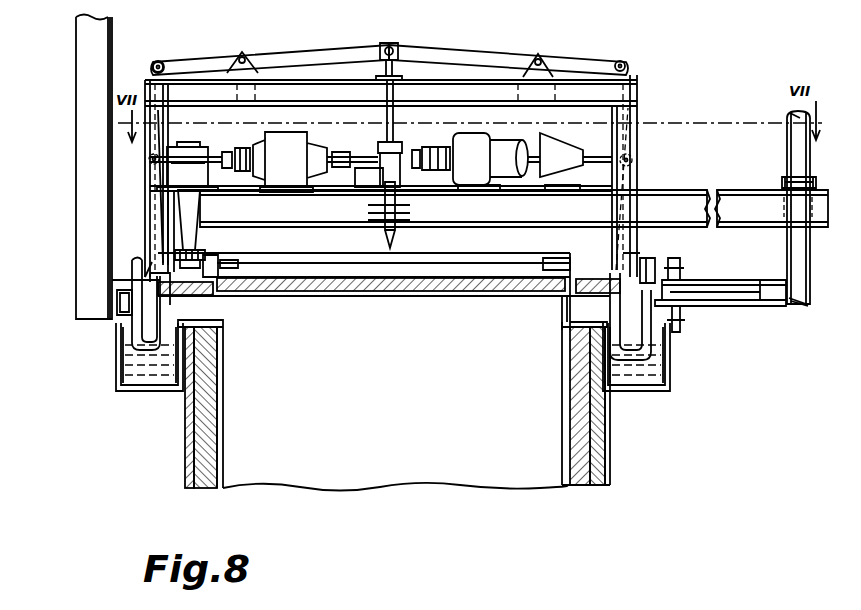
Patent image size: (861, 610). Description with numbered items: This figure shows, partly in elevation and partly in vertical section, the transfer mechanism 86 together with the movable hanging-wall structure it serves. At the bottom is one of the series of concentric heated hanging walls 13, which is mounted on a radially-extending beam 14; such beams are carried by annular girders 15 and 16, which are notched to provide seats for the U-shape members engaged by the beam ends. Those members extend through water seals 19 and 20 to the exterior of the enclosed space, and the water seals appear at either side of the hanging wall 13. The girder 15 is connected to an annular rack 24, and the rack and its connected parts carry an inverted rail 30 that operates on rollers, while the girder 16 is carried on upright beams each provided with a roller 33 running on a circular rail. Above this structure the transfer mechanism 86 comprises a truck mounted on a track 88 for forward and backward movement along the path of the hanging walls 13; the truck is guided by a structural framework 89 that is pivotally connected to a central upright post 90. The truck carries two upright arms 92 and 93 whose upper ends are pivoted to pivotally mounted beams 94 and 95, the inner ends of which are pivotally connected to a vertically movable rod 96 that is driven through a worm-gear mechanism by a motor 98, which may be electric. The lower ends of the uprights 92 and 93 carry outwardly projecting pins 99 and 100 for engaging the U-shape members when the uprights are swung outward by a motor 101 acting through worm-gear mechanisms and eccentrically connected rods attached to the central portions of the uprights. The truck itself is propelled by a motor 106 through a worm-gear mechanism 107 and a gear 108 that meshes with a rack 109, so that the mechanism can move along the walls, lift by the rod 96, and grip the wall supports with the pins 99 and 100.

The hanging wall 13 is at (394, 405).
The radially-extending beam 14 is at (590, 290).
The annular girder 15 is at (660, 341).
The annular girder 16 is at (105, 306).
The water seal 19 is at (672, 376).
The water seal 20 is at (118, 379).
The annular rack 24 is at (684, 271).
The inverted rail 30 is at (684, 323).
The roller 33 is at (95, 210).
The transfer mechanism 86 is at (598, 96).
The track 88 is at (398, 247).
The structural framework 89 is at (730, 200).
The central upright post 90 is at (798, 142).
The upright arm 92 is at (628, 67).
The upright arm 93 is at (150, 72).
The pivotally mounted beam 94 is at (502, 56).
The pivotally mounted beam 95 is at (292, 58).
The vertically movable rod 96 is at (398, 117).
The motor 98 is at (490, 132).
The outwardly projecting pin 99 is at (652, 261).
The outwardly projecting pin 100 is at (134, 271).
The motor 101 is at (558, 148).
The motor 106 is at (270, 145).
The worm-gear mechanism 107 is at (190, 141).
The gear 108 is at (218, 289).
The rack 109 is at (208, 252).